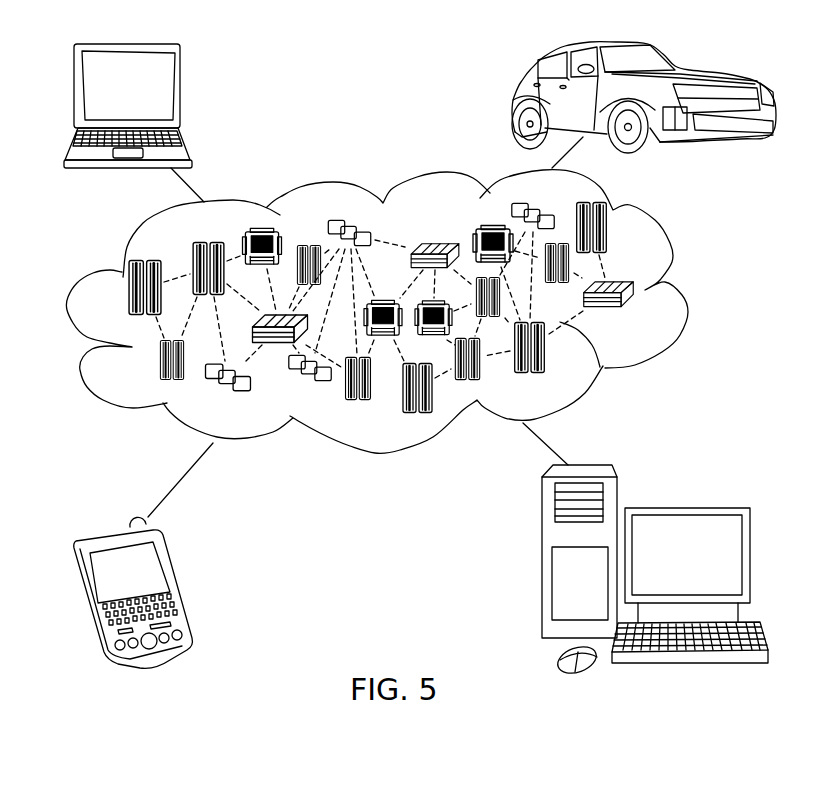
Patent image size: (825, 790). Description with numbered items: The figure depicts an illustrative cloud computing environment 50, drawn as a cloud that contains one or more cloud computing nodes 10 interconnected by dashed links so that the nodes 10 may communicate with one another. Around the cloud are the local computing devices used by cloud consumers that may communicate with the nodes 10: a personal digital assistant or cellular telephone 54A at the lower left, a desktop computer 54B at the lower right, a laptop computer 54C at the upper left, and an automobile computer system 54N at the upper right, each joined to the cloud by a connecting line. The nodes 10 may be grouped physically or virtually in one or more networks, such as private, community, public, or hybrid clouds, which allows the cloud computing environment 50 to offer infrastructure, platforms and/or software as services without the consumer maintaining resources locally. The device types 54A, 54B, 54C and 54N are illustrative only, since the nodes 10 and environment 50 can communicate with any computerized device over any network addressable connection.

The cloud computing node 10 is at (650, 319).
The cloud computing environment 50 is at (685, 294).
The personal digital assistant or cellular telephone 54A is at (178, 583).
The desktop computer 54B is at (683, 508).
The laptop computer 54C is at (183, 92).
The automobile computer system 54N is at (517, 98).